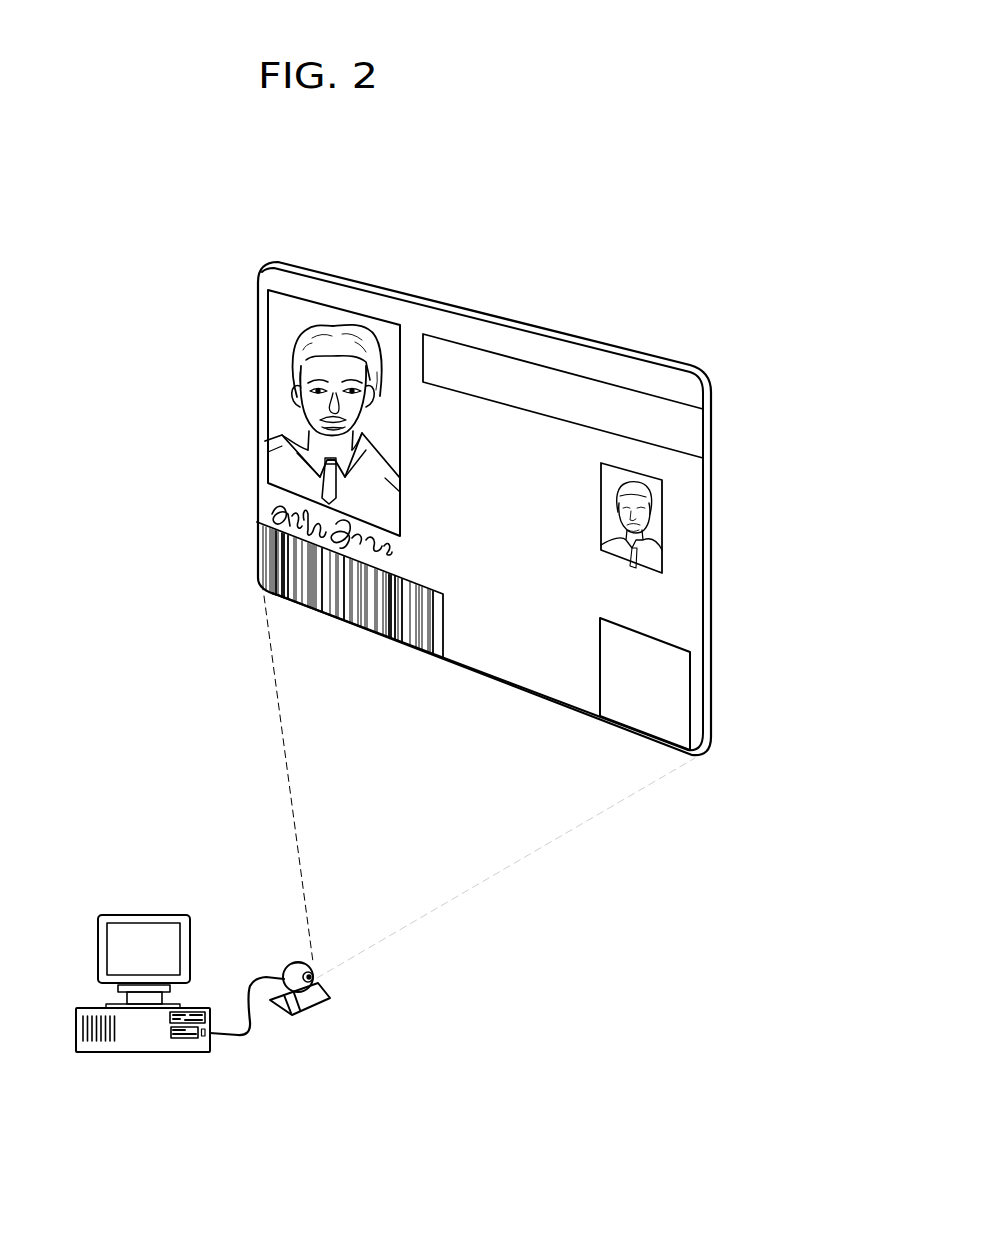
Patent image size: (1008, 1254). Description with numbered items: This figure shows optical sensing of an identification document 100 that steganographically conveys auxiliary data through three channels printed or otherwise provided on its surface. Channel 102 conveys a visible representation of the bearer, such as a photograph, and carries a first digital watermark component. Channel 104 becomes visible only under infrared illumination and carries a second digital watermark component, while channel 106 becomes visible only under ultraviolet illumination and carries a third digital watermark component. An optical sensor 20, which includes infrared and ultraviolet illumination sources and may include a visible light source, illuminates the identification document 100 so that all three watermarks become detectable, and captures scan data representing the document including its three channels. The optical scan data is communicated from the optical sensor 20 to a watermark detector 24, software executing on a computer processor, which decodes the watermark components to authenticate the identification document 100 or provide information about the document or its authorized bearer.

The identification document 100 is at (503, 449).
The channel 102 is at (295, 462).
The channel 104 is at (655, 700).
The channel 106 is at (655, 527).
The optical sensor 20 is at (300, 962).
The watermark detector 24 is at (128, 913).